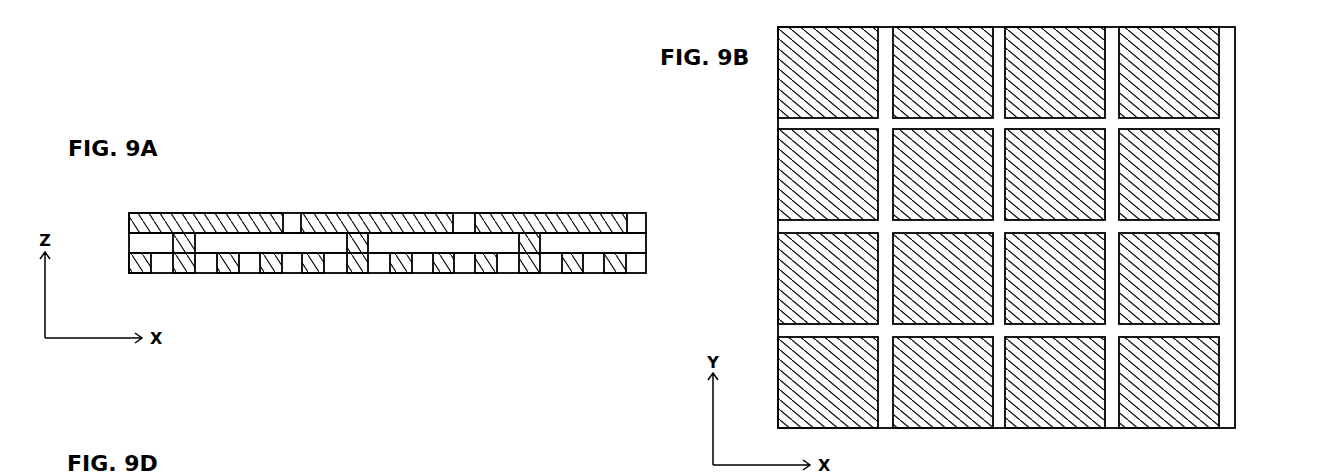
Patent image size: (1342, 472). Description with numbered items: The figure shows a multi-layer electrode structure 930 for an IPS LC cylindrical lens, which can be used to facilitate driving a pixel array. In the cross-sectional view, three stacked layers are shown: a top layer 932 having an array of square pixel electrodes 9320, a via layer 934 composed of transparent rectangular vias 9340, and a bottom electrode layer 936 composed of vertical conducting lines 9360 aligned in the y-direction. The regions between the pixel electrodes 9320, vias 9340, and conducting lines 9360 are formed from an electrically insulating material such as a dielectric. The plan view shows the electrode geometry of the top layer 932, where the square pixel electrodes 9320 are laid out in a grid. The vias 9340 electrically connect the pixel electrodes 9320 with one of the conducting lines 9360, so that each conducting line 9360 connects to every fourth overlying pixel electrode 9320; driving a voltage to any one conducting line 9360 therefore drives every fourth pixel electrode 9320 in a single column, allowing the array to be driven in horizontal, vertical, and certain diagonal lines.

In FIG. 9A, the multi-layer electrode structure 930 is at (548, 153).
In FIG. 9A, the top layer 932 is at (646, 218).
In FIG. 9B, the top layer 932 is at (1313, 31).
In FIG. 9A, the square pixel electrodes 9320 is at (148, 220).
In FIG. 9B, the square pixel electrodes 9320 is at (1207, 273).
In FIG. 9A, the via layer 934 is at (646, 242).
In FIG. 9D, the via layer 934 is at (535, 471).
In FIG. 9A, the transparent rectangular vias 9340 is at (184, 273).
In FIG. 9D, the transparent rectangular vias 9340 is at (404, 471).
In FIG. 9A, the bottom electrode layer 936 is at (646, 265).
In FIG. 9A, the conducting lines 9360 is at (140, 273).